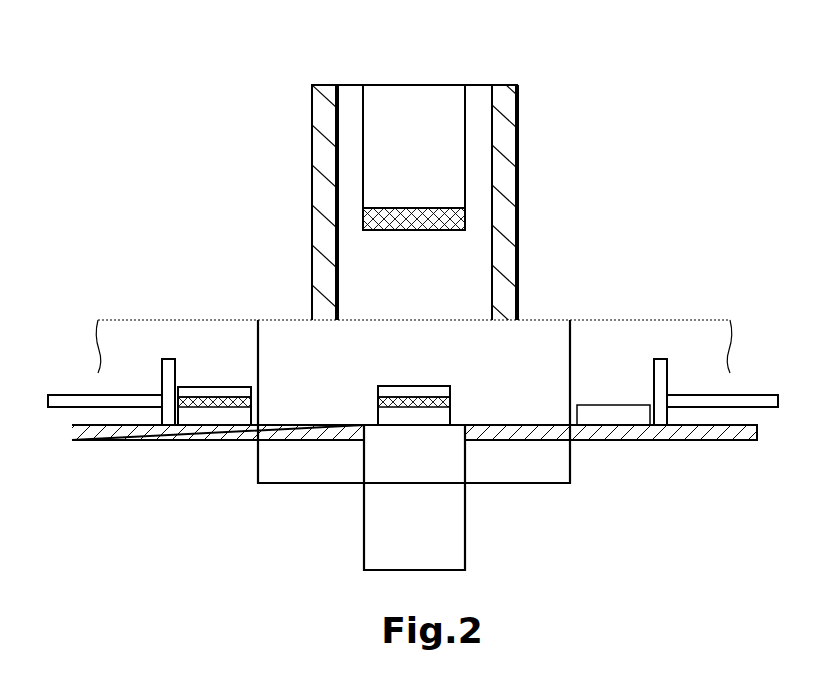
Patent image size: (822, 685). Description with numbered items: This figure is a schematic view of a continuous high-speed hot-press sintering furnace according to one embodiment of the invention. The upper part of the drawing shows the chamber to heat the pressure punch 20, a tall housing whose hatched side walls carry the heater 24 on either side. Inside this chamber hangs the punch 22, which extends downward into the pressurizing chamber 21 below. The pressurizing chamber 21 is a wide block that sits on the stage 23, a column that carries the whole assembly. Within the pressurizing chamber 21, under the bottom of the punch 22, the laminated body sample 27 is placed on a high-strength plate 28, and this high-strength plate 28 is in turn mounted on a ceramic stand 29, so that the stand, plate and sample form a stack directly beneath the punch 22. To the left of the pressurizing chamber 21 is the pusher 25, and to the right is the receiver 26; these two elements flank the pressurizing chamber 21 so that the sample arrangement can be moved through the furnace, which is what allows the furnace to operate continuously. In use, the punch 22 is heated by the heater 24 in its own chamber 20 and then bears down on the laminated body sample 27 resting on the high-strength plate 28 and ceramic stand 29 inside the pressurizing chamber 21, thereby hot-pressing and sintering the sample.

The chamber to heat the pressure punch 20 is at (462, 277).
The pressurizing chamber 21 is at (293, 335).
The punch 22 is at (418, 103).
The stage 23 is at (443, 514).
The heater 24 is at (318, 150).
The pusher 25 is at (168, 378).
The receiver 26 is at (658, 381).
The laminated body sample 27 is at (420, 388).
The high-strength plate 28 is at (462, 219).
The ceramic stand 29 is at (215, 415).